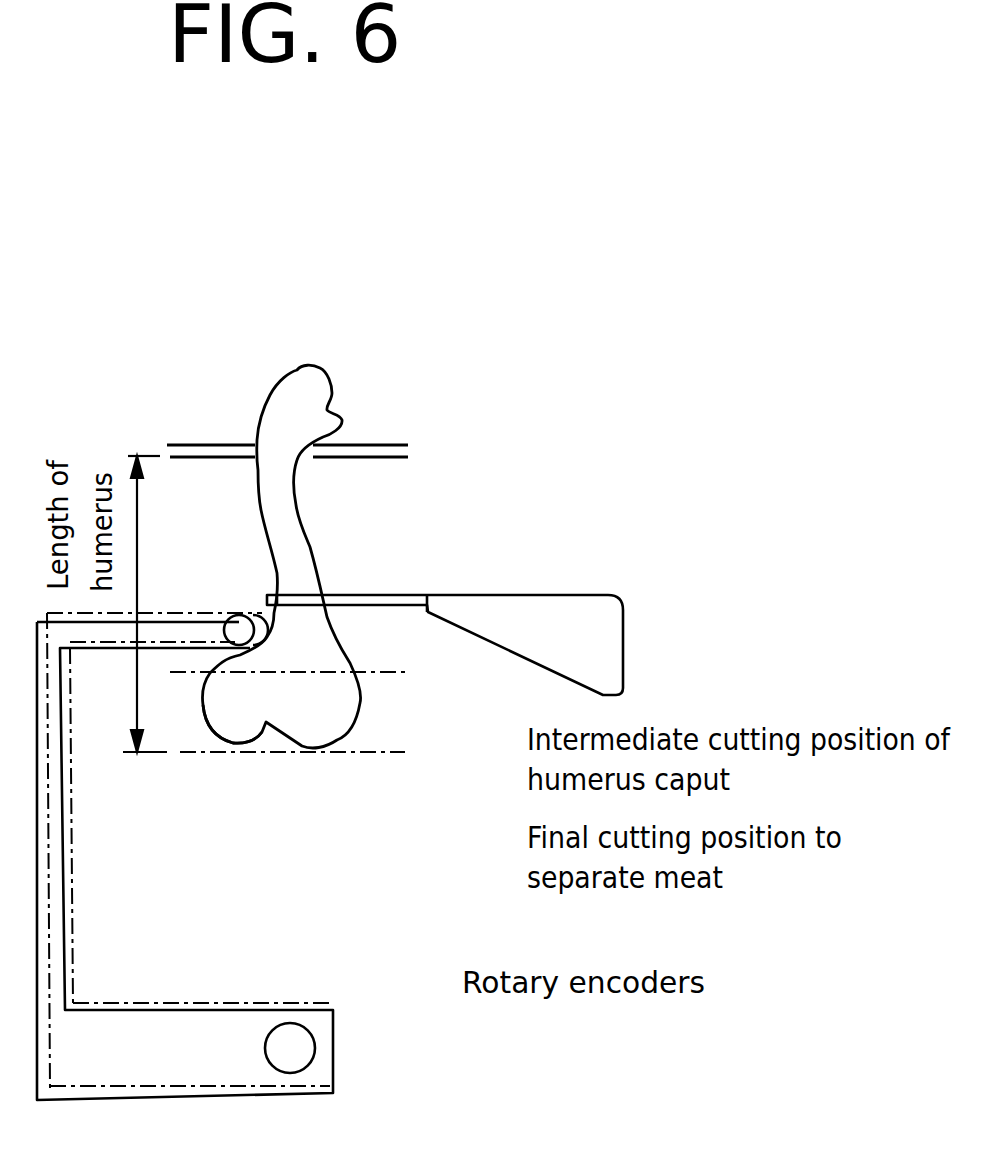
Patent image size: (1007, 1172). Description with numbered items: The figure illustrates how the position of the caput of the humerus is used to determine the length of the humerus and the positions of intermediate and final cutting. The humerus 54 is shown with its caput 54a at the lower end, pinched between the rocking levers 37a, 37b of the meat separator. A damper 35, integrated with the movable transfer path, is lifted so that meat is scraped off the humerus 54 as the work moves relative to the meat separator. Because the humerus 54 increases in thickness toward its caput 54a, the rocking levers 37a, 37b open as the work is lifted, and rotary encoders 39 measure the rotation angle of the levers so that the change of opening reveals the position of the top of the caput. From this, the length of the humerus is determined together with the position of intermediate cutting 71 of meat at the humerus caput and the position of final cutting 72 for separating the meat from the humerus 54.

The damper 35 is at (380, 447).
The rocking lever 37a is at (148, 613).
The rocking lever 37b is at (407, 595).
The humerus 54 is at (310, 550).
The caput of the humerus 54a is at (302, 712).
The position of intermediate cutting 71 is at (407, 672).
The position of final cutting 72 is at (390, 753).
The rotary encoders 39 is at (290, 1048).